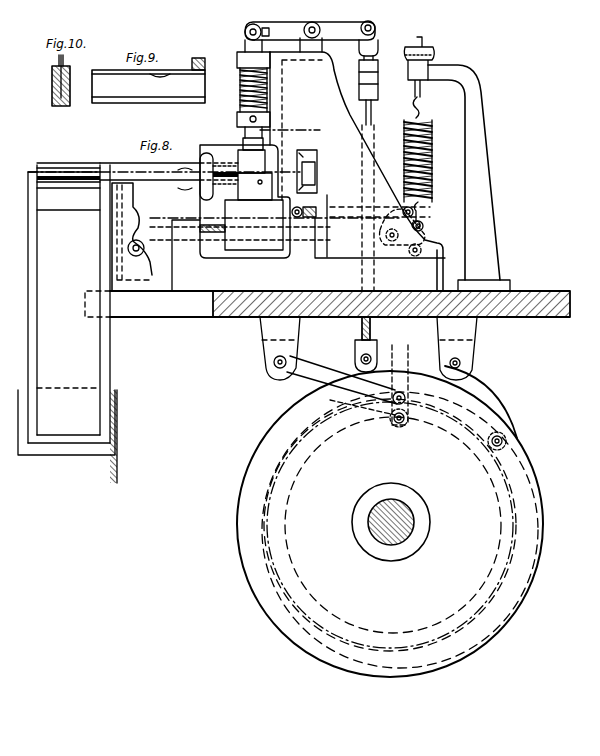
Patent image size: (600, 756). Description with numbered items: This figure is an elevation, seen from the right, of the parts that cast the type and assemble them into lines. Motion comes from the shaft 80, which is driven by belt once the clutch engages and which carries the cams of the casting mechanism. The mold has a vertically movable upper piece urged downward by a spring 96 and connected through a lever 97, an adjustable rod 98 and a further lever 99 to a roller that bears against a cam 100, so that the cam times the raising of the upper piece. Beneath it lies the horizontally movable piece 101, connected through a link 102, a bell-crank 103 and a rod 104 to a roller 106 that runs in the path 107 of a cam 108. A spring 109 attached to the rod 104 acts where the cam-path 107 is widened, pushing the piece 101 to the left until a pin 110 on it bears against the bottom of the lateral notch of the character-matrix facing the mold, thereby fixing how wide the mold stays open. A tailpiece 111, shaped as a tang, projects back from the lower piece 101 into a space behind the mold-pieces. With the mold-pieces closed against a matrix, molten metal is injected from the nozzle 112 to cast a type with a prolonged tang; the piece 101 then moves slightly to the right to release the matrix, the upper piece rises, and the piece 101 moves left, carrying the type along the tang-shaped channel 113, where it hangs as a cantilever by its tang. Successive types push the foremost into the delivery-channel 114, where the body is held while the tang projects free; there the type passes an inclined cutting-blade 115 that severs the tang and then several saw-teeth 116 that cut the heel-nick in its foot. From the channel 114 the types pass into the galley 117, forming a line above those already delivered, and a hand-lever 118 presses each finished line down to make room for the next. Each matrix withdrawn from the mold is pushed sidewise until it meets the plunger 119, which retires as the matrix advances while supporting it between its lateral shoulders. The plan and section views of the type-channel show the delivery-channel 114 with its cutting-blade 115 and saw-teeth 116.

In FIG. 8, the shaft 80 is at (408, 514).
In FIG. 8, the spring 96 is at (244, 88).
In FIG. 8, the lever 97 is at (310, 36).
In FIG. 8, the adjustable rod 98 is at (376, 92).
In FIG. 8, the lever 99 is at (378, 356).
In FIG. 8, the cam 100 is at (492, 434).
In FIG. 8, the horizontally-movable piece 101 is at (275, 223).
In FIG. 8, the link 102 is at (328, 360).
In FIG. 8, the bell-crank 103 is at (408, 245).
In FIG. 8, the rod 104 is at (376, 330).
In FIG. 8, the roller 106 is at (409, 391).
In FIG. 8, the cam-path 107 is at (380, 419).
In FIG. 8, the cam 108 is at (252, 468).
In FIG. 8, the spring 109 is at (418, 174).
In FIG. 8, the pin 110 is at (236, 176).
In FIG. 8, the tailpiece 111 is at (310, 184).
In FIG. 8, the nozzle 112 is at (226, 170).
In FIG. 8, the tang-shaped channel 113 is at (245, 198).
In FIG. 8, the delivery-channel 114 is at (164, 164).
In FIG. 9, the inclined cutting-blade 115 is at (195, 68).
In FIG. 8, the inclined cutting-blade 115 is at (188, 184).
In FIG. 9, the saw-teeth 116 is at (148, 86).
In FIG. 8, the saw-teeth 116 is at (156, 237).
In FIG. 8, the galley 117 is at (67, 324).
In FIG. 8, the hand-lever 118 is at (86, 163).
In FIG. 8, the plunger 119 is at (436, 152).